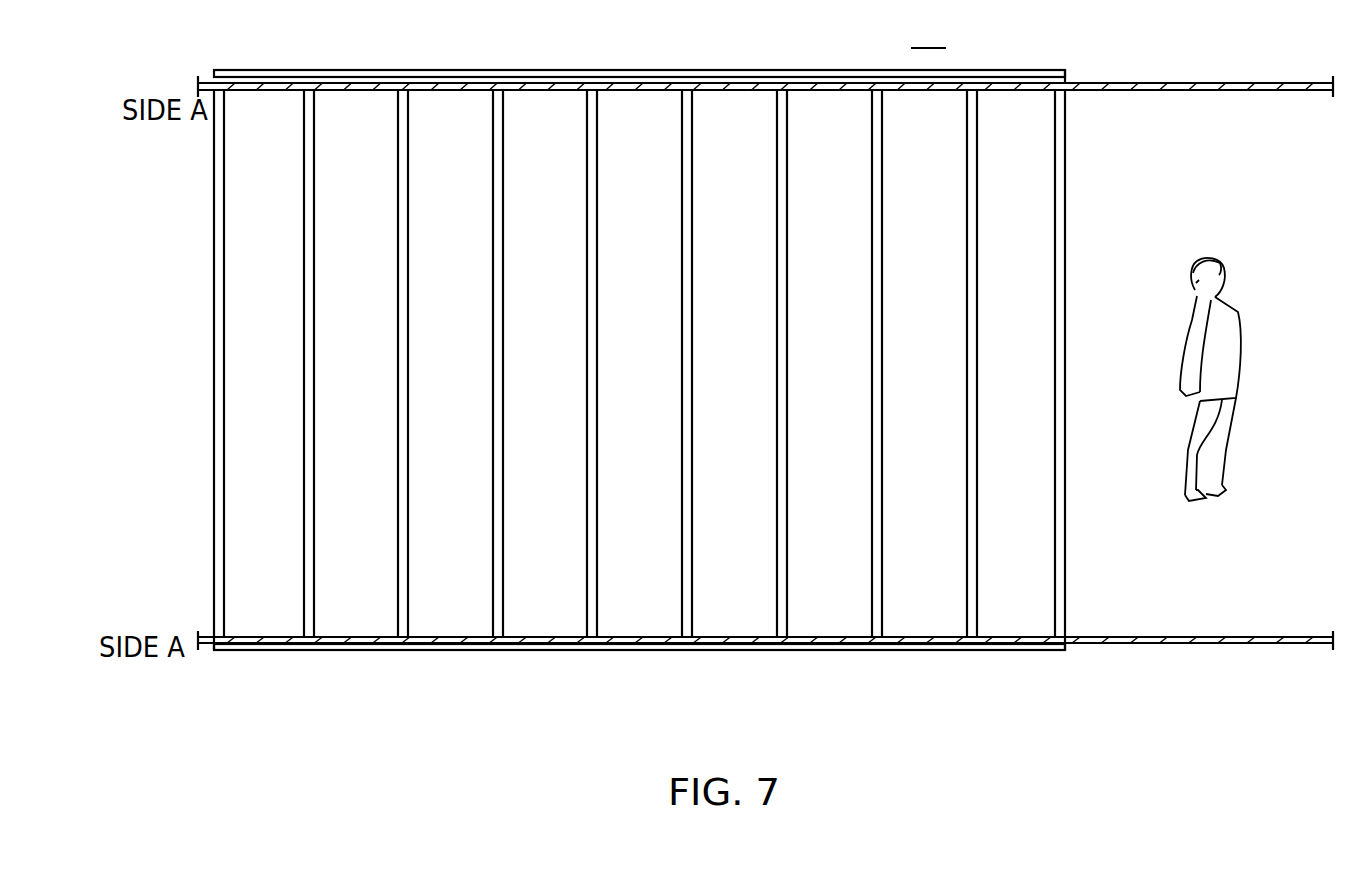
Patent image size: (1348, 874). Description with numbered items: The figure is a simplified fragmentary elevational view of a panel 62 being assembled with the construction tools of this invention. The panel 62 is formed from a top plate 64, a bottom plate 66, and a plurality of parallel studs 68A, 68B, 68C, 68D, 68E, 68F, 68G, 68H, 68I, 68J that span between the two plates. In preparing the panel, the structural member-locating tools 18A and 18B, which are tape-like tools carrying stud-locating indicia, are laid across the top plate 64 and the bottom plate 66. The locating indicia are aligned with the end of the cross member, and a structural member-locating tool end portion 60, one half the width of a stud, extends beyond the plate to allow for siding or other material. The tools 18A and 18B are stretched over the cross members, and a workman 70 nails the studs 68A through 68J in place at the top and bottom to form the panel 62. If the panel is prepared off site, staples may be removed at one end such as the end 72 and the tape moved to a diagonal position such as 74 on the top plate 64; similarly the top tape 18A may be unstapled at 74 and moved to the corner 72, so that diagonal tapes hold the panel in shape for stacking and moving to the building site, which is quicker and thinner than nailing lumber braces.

The structural member-locating tool 18A is at (452, 89).
The structural member-locating tool 18B is at (735, 645).
The structural member-locating tool end portion 60 is at (203, 651).
The panel 62 is at (928, 35).
The top plate 64 is at (744, 70).
The bottom plate 66 is at (570, 650).
The stud 68A is at (225, 461).
The stud 68B is at (315, 441).
The stud 68C is at (409, 380).
The stud 68D is at (504, 360).
The stud 68E is at (598, 348).
The stud 68F is at (693, 333).
The stud 68G is at (788, 340).
The stud 68H is at (883, 325).
The stud 68I is at (978, 322).
The stud 68J is at (1066, 315).
The workman 70 is at (1177, 240).
The end 72 is at (1065, 650).
The diagonal position 74 is at (1065, 83).